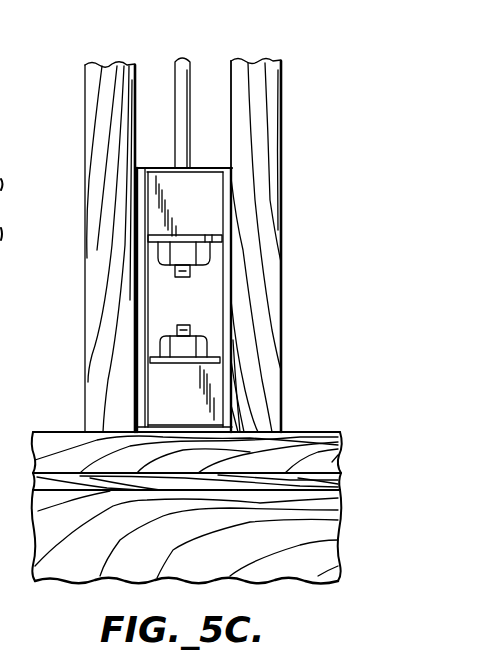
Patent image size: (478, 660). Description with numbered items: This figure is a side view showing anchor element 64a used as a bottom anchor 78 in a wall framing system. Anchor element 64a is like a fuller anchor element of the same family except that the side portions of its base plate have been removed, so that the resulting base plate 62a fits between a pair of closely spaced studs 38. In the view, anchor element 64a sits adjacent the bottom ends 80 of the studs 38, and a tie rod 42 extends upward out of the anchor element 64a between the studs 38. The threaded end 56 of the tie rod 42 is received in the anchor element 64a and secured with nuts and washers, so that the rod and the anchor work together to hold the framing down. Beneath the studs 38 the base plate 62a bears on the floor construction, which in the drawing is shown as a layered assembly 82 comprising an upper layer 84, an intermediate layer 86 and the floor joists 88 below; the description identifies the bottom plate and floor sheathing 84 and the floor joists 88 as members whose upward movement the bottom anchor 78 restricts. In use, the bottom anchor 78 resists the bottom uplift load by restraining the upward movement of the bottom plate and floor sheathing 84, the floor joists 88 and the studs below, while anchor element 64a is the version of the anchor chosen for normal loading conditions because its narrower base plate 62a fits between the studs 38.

The bottom anchor 78 is at (290, 41).
The studs 38 is at (98, 96).
The tie rod 42 is at (190, 78).
The anchor element 64a is at (208, 167).
The threaded end 56 is at (186, 327).
The base plate 62a is at (168, 425).
The bottom end 80 is at (262, 405).
The floor assembly 82 is at (325, 432).
The bottom plate 84 is at (330, 457).
The underlayment layer 86 is at (330, 479).
The floor joists 88 is at (333, 514).